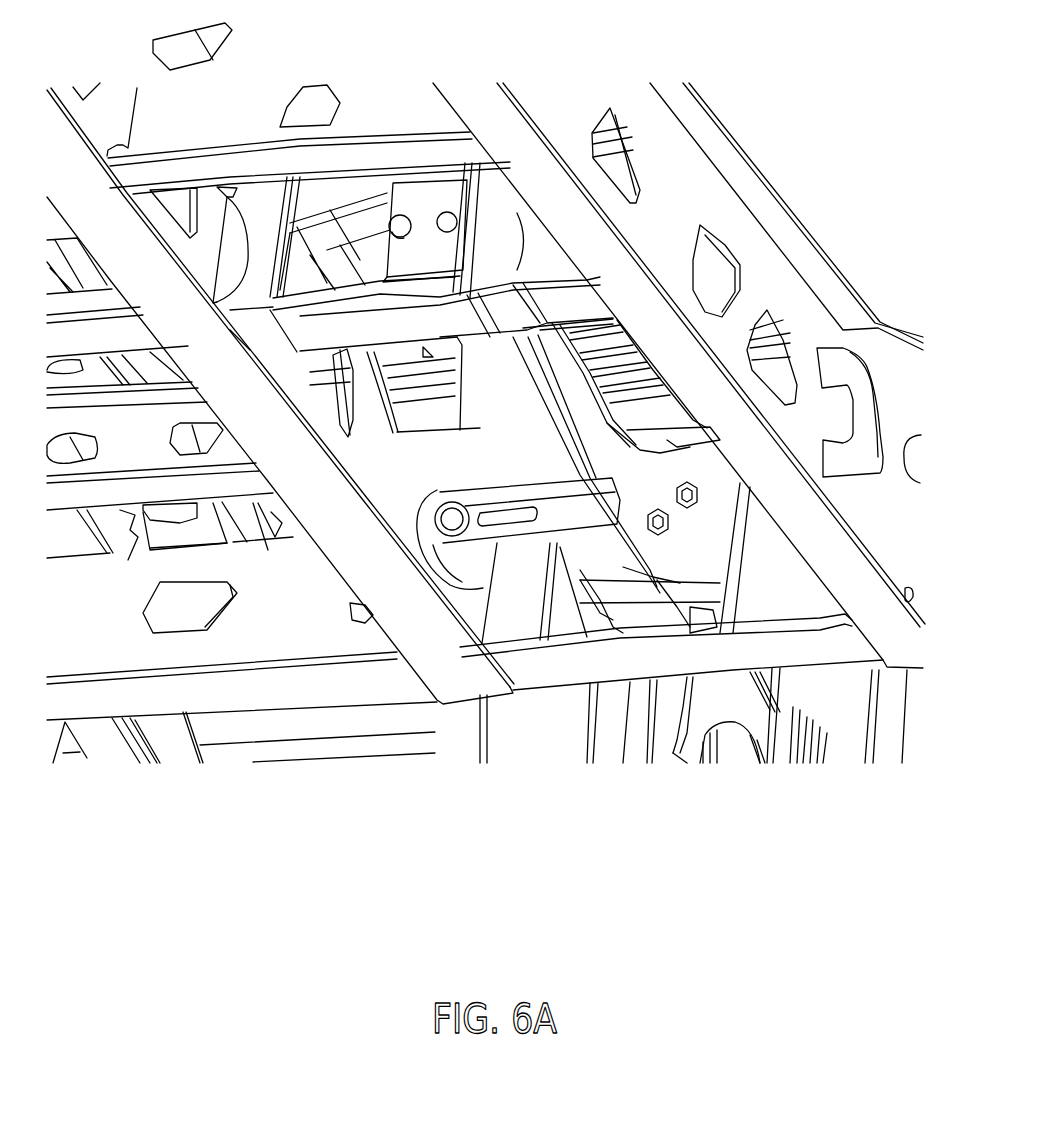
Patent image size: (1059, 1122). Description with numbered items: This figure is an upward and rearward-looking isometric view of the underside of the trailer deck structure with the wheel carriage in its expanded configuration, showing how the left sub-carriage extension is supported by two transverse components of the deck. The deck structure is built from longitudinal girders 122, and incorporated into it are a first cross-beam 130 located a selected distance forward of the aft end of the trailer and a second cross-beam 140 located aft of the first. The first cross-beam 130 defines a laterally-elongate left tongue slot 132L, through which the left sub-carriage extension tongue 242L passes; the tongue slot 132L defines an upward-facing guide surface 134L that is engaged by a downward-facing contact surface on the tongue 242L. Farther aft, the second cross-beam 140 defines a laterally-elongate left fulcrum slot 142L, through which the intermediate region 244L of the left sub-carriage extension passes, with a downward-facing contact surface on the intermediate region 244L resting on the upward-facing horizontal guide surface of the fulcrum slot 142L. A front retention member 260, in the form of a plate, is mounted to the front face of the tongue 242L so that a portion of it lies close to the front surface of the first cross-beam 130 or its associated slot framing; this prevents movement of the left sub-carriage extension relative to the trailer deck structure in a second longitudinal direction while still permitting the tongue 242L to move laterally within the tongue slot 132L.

The longitudinal girder 122 is at (730, 153).
The first cross-beam 130 is at (372, 322).
The left tongue slot 132L is at (375, 252).
The left upward-facing guide surface 134L is at (268, 307).
The second cross-beam 140 is at (387, 685).
The left fulcrum slot 142L is at (607, 643).
The left sub-carriage extension tongue 242L is at (500, 350).
The intermediate region of left sub-carriage extension 244L is at (717, 527).
The front retention member 260 is at (445, 190).